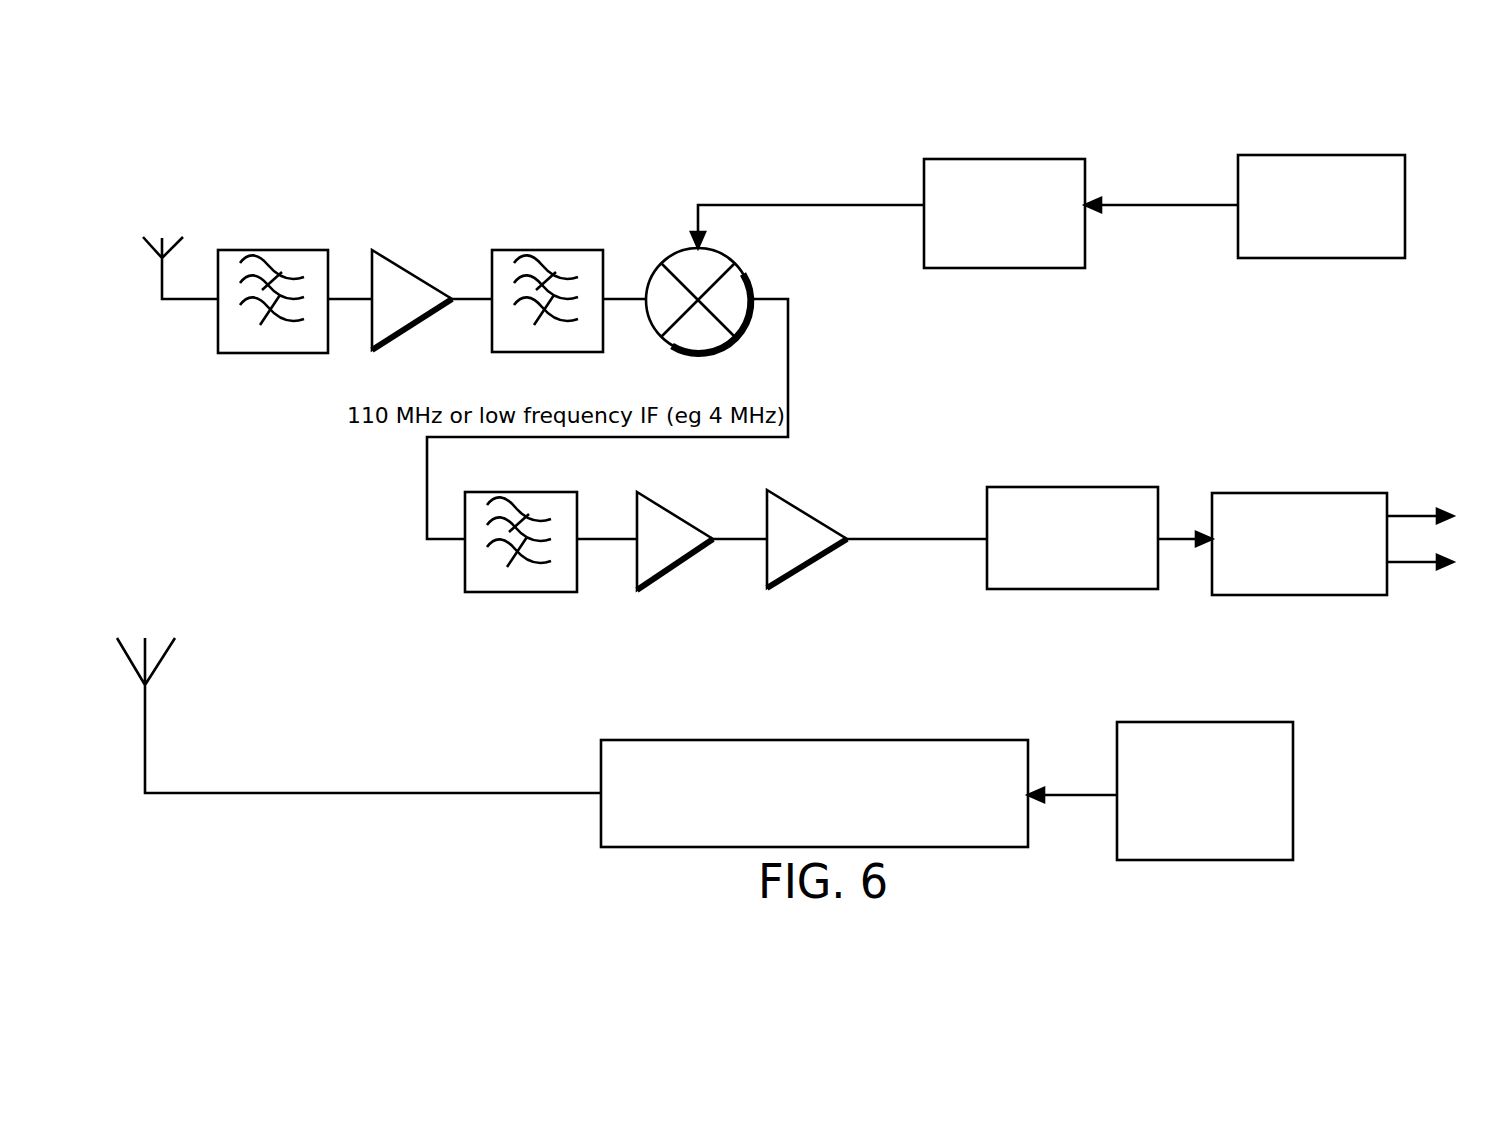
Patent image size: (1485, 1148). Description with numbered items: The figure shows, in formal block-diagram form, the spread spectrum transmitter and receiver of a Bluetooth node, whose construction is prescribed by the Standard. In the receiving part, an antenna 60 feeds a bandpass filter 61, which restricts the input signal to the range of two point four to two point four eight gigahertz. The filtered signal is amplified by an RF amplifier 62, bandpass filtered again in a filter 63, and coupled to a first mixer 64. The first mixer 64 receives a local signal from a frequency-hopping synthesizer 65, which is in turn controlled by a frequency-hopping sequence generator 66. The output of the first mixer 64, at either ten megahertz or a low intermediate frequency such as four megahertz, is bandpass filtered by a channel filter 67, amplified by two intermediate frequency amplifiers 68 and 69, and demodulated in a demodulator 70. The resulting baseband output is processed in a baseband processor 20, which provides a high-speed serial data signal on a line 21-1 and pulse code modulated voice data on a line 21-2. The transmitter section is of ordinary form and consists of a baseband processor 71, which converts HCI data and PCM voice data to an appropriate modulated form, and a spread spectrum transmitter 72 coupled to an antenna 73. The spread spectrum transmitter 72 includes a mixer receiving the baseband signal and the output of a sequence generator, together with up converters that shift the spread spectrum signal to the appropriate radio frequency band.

The antenna 60 is at (128, 288).
The bandpass filter 61 is at (330, 250).
The RF amplifier 62 is at (410, 268).
The filter 63 is at (523, 250).
The first mixer 64 is at (747, 277).
The frequency-hopping synthesizer 65 is at (1025, 157).
The frequency-hopping sequence generator 66 is at (1282, 155).
The channel filter 67 is at (465, 585).
The intermediate frequency amplifier 68 is at (687, 523).
The intermediate frequency amplifier 69 is at (805, 510).
The demodulator 70 is at (1083, 485).
The baseband processor 20 is at (1257, 492).
The line 21-1 is at (1417, 513).
The line 21-2 is at (1397, 575).
The baseband processor 71 is at (1293, 753).
The spread spectrum transmitter 72 is at (753, 740).
The antenna 73 is at (163, 753).